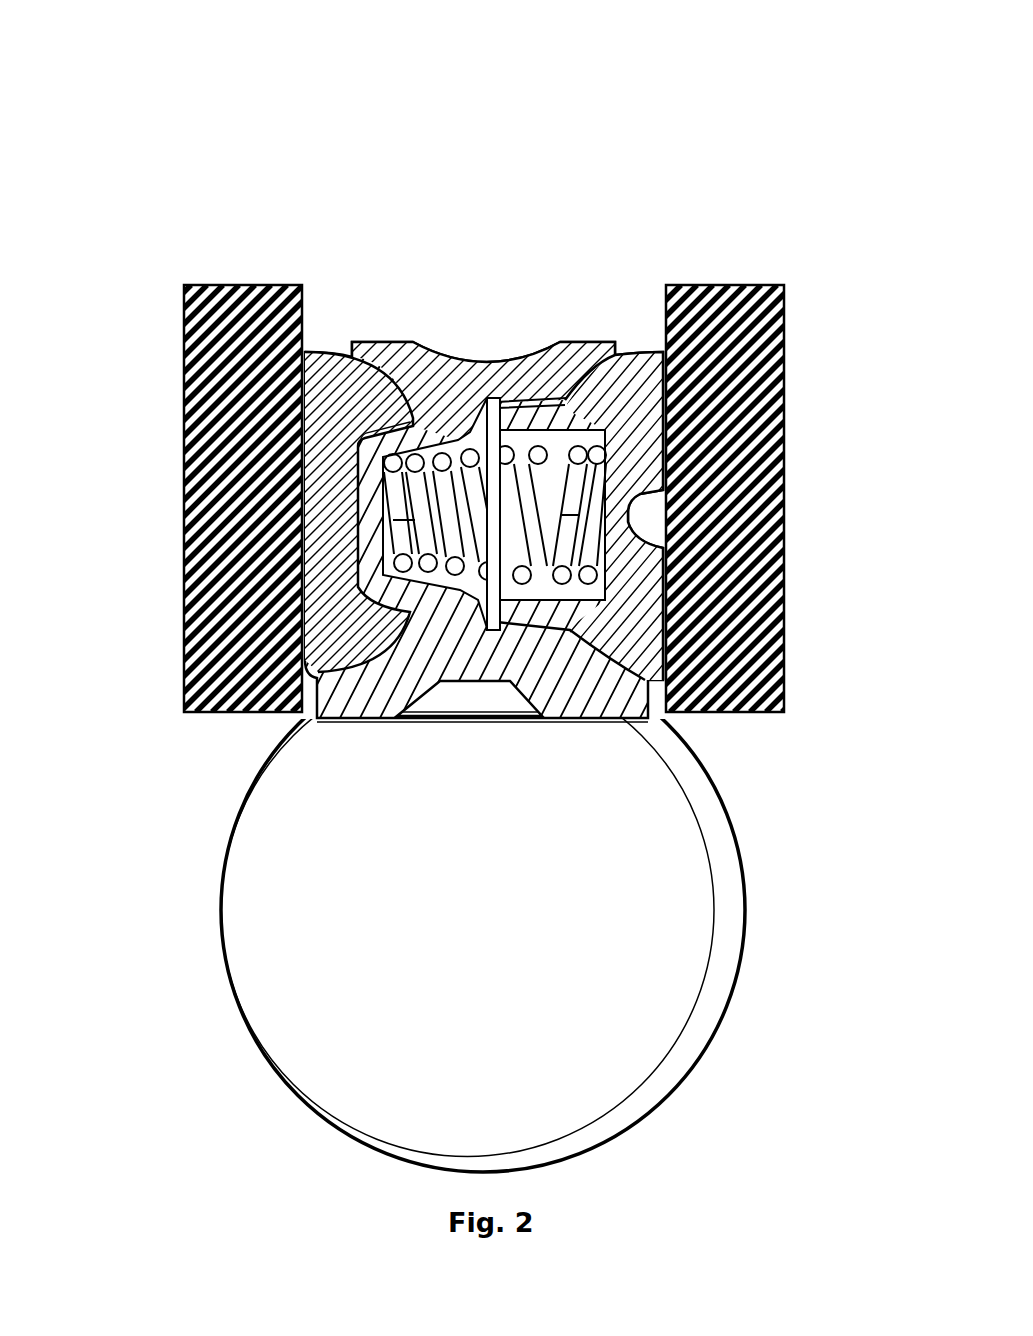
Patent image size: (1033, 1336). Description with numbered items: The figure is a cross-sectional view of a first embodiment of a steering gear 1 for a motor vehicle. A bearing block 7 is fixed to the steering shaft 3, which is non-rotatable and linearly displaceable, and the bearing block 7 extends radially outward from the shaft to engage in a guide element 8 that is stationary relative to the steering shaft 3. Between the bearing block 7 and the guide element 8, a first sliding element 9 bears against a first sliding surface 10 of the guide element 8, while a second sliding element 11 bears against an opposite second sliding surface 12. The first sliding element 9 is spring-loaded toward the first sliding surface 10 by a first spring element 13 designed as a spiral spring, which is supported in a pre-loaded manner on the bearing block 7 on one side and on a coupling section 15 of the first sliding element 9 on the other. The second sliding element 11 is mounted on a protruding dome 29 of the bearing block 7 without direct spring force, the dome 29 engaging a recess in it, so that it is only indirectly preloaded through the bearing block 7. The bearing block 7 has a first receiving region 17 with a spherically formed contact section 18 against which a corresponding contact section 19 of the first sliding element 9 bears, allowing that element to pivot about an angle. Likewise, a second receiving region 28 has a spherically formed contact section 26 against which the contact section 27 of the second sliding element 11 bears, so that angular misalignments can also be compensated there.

The steering gear 1 is at (298, 155).
The steering shaft 3 is at (292, 1040).
The bearing block 7 is at (483, 372).
The guide element 8 is at (185, 415).
The first sliding element 9 is at (637, 387).
The first sliding surface 10 is at (643, 584).
The second sliding element 11 is at (318, 390).
The second sliding surface 12 is at (315, 437).
The first spring element 13 is at (438, 462).
The coupling section 15 is at (628, 441).
The first receiving region 17 is at (555, 365).
The spherically formed contact section 18 is at (592, 668).
The contact section 19 is at (629, 656).
The spherically formed contact section 26 is at (368, 692).
The contact section 27 is at (358, 643).
The second receiving region 28 is at (386, 664).
The dome 29 is at (355, 549).